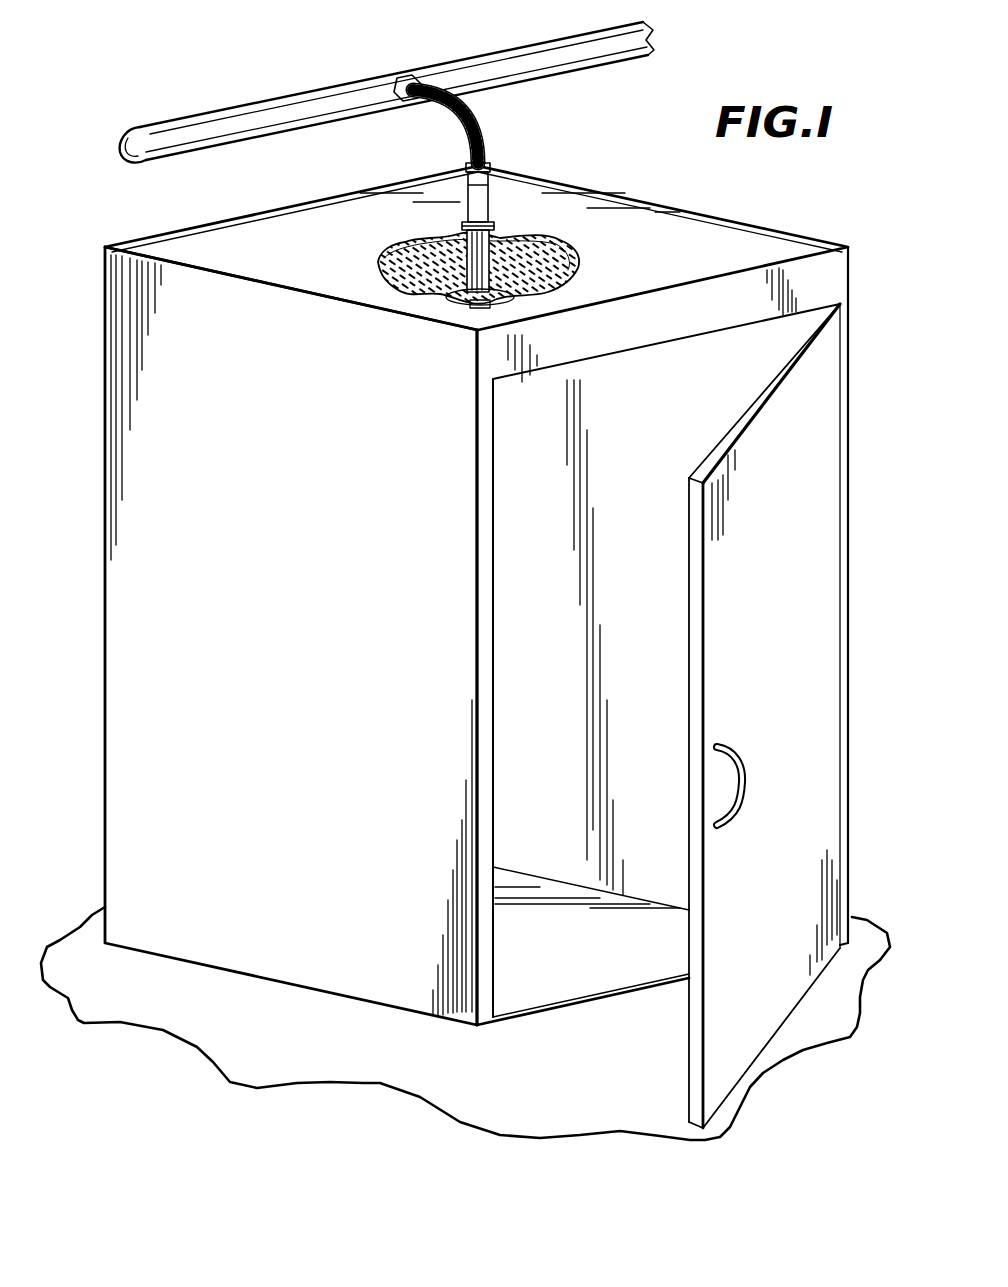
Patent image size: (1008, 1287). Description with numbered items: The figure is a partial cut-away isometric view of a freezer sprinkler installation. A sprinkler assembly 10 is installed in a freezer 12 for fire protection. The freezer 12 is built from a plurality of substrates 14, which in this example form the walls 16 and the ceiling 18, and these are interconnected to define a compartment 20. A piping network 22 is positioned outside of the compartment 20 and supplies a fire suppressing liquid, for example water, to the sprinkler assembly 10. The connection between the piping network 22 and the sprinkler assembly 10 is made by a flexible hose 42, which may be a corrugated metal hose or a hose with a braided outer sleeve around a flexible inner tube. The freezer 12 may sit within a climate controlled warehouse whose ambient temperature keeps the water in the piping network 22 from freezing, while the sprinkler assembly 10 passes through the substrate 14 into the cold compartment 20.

The sprinkler assembly 10 is at (465, 607).
The freezer 12 is at (105, 657).
The substrate 14 is at (117, 822).
The wall 16 is at (117, 728).
The ceiling 18 is at (767, 243).
The compartment 20 is at (665, 387).
The piping network 22 is at (218, 122).
The flexible hose 42 is at (480, 117).